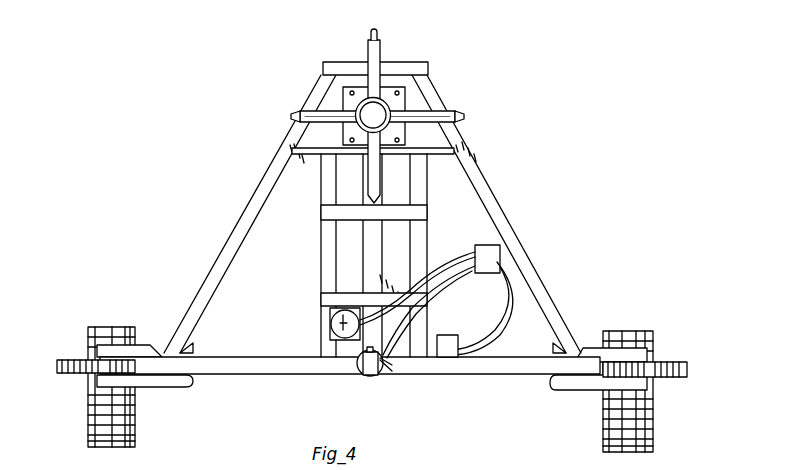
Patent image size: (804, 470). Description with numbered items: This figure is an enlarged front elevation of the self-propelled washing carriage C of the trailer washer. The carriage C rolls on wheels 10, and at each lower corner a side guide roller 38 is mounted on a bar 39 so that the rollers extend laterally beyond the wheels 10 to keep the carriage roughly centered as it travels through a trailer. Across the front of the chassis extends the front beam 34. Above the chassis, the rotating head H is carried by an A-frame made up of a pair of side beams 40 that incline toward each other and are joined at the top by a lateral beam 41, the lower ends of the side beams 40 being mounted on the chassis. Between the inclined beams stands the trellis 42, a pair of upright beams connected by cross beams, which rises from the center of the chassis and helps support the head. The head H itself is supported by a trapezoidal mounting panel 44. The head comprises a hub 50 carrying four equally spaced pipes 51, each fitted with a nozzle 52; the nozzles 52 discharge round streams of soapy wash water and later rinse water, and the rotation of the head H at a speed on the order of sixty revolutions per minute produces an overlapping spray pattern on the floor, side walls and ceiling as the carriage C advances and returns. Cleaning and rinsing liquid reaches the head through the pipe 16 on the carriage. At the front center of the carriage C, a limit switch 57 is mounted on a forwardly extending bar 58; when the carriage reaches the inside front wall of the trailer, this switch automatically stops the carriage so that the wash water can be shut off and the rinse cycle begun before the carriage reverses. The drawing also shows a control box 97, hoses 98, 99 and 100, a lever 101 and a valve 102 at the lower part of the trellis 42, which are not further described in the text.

The wheel 10 is at (135, 433).
The pipe 16 is at (363, 237).
The front beam 34 is at (528, 377).
The side guide roller 38 is at (52, 362).
The bar 39 is at (152, 352).
The side beam 40 is at (247, 217).
The lateral beam 41 is at (420, 65).
The trellis 42 is at (321, 247).
The trapezoidal mounting panel 44 is at (445, 140).
The hub 50 is at (380, 117).
The pipe 51 is at (367, 50).
The nozzle 52 is at (371, 36).
The limit switch 57 is at (358, 371).
The forwardly extending bar 58 is at (393, 372).
The control box 97 is at (478, 246).
The hose 98 is at (497, 302).
The hose 99 is at (462, 352).
The hose 100 is at (438, 322).
The lever 101 is at (403, 302).
The valve 102 is at (343, 325).
The rotating head H is at (355, 100).
The carriage C is at (212, 252).